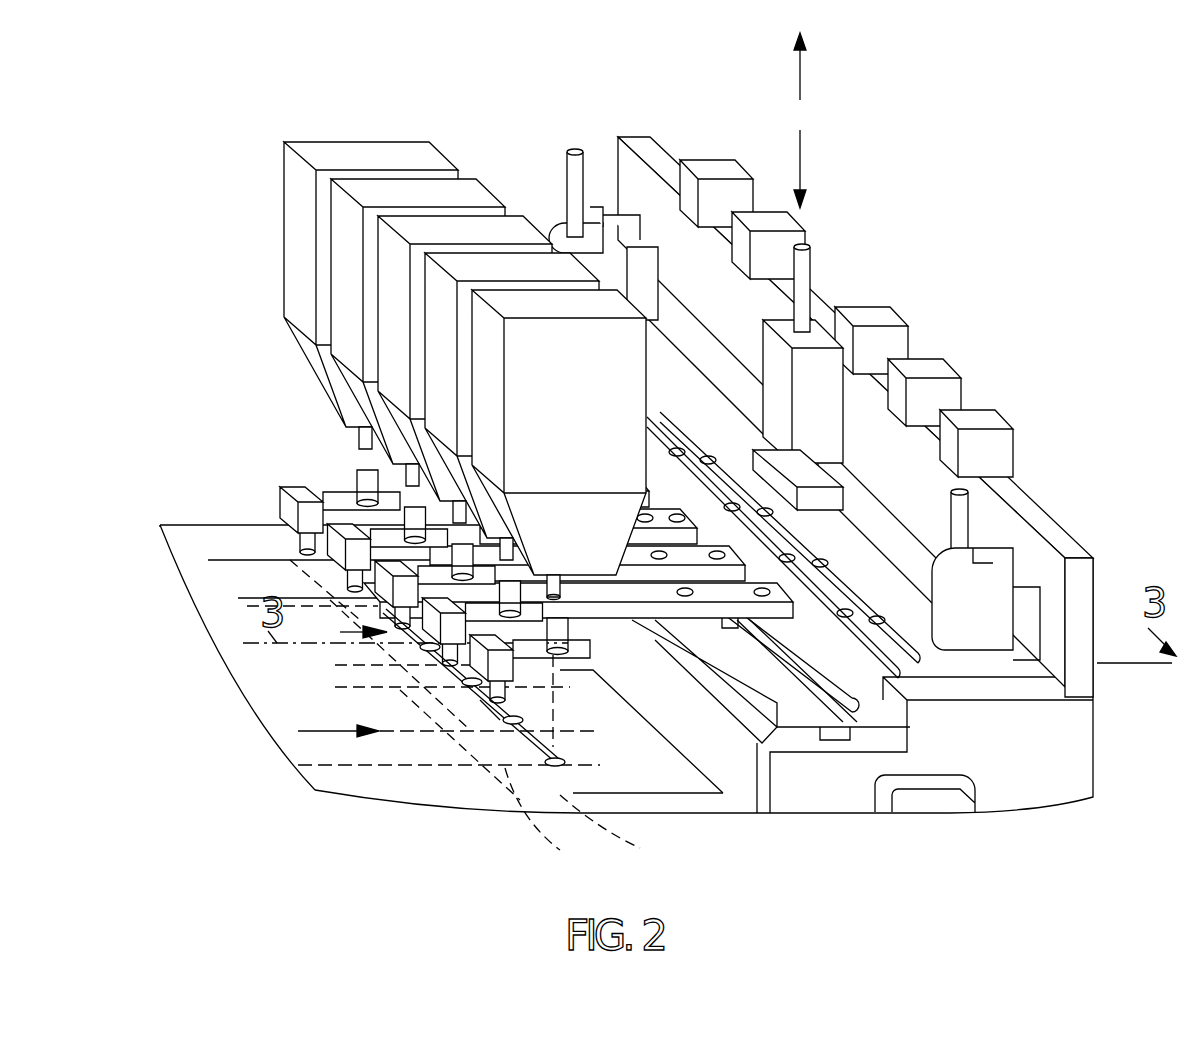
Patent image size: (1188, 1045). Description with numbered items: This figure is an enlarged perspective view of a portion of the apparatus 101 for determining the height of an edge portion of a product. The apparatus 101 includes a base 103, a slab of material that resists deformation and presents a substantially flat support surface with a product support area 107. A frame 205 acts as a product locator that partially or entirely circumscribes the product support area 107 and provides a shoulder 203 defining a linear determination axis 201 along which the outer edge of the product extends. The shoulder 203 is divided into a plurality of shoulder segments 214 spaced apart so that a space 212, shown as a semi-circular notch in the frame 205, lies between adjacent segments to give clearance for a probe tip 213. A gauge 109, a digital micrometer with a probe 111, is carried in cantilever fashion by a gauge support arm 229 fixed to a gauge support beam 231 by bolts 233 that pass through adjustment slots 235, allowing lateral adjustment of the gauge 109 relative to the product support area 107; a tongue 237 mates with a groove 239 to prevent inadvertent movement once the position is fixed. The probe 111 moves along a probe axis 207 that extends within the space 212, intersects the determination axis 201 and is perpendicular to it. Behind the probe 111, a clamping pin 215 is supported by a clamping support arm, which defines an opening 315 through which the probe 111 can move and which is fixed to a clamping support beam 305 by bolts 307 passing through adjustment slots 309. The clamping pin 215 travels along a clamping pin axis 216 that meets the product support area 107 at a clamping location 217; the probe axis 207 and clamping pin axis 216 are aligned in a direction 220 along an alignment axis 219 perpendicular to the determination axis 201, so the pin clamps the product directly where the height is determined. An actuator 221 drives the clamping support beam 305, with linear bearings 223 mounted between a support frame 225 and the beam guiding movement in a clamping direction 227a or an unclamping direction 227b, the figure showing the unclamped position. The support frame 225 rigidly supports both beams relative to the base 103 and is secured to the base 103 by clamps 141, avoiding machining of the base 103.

The apparatus 101 is at (922, 148).
The base 103 is at (190, 470).
The product support area 107 is at (300, 760).
The gauge 109 is at (323, 140).
The probe 111 is at (560, 622).
The clamps 141 is at (945, 805).
The determination axis 201 is at (616, 834).
The shoulder 203 is at (340, 632).
The frame 205 is at (385, 788).
The probe axis 207 is at (553, 747).
The space 212 is at (443, 680).
The probe tip 213 is at (553, 684).
The shoulder segments 214 is at (483, 707).
The clamping pin 215 is at (487, 697).
The clamping pin axis 216 is at (532, 701).
The clamping location 217 is at (500, 770).
The alignment axis 219 is at (528, 795).
The direction 220 is at (332, 738).
The actuator 221 is at (850, 393).
The linear bearings 223 is at (603, 143).
The support frame 225 is at (1090, 522).
The clamping direction 227a is at (806, 165).
The unclamping direction 227b is at (806, 82).
The gauge support arm 229 is at (775, 498).
The gauge support beam 231 is at (893, 748).
The bolts 233 is at (686, 588).
The adjustment slots 235 is at (773, 720).
The tongue 237 is at (745, 640).
The groove 239 is at (833, 737).
The clamping support beam 305 is at (965, 660).
The bolts 307 is at (818, 563).
The adjustment slots 309 is at (860, 600).
The opening 315 is at (366, 498).